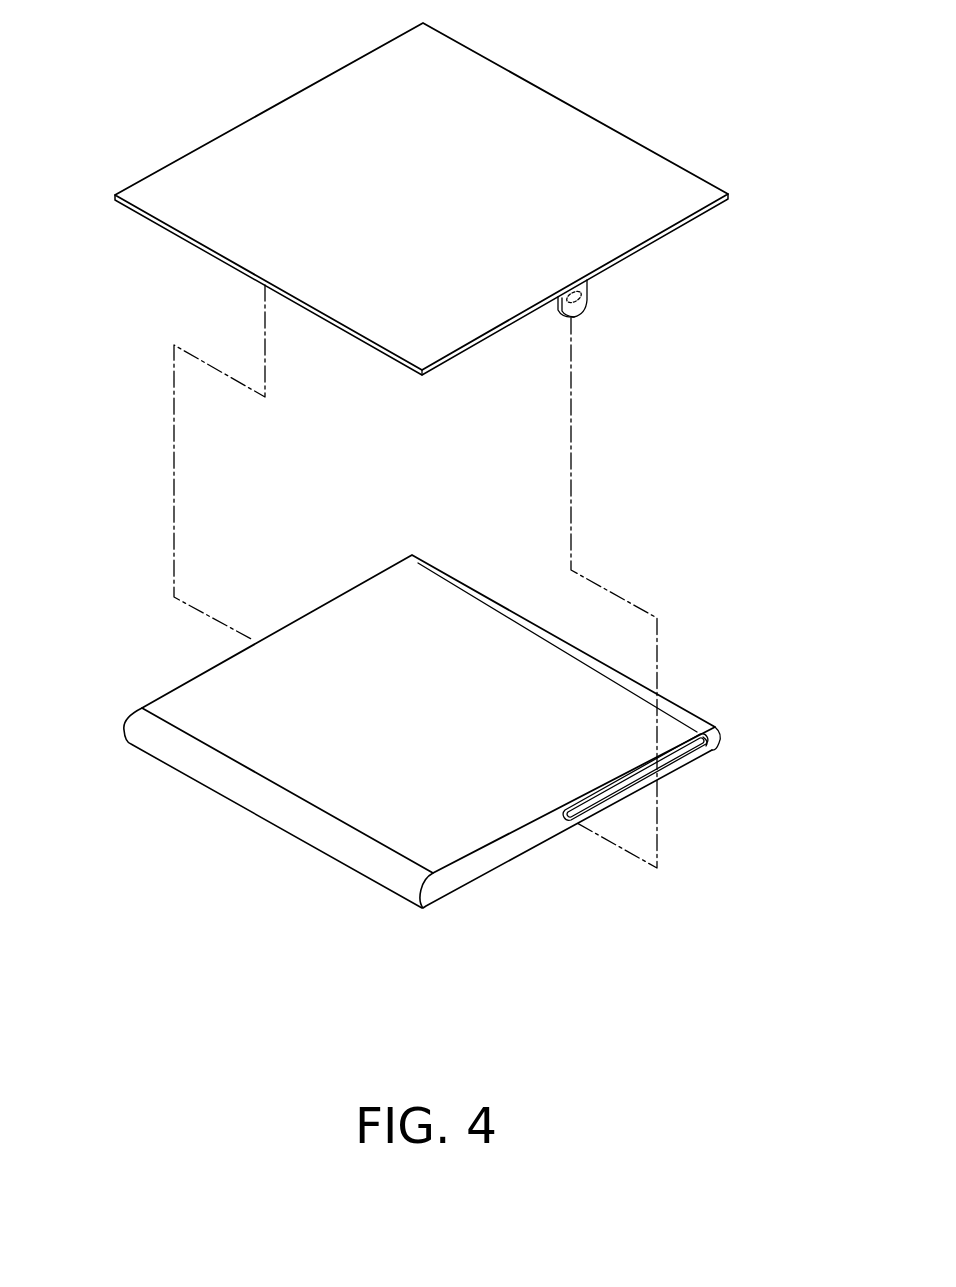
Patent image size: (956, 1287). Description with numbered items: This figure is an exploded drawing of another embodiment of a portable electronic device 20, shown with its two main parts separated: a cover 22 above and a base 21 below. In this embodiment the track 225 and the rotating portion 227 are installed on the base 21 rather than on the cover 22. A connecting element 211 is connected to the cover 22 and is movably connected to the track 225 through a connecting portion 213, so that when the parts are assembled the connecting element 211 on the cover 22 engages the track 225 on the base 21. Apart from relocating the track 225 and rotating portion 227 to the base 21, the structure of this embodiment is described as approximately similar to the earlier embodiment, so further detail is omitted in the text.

The portable electronic device 20 is at (773, 952).
The base 21 is at (453, 745).
The cover 22 is at (413, 210).
The connecting element 211 is at (580, 316).
The connecting portion 213 is at (588, 297).
The track 225 is at (663, 760).
The rotating portion 227 is at (713, 748).